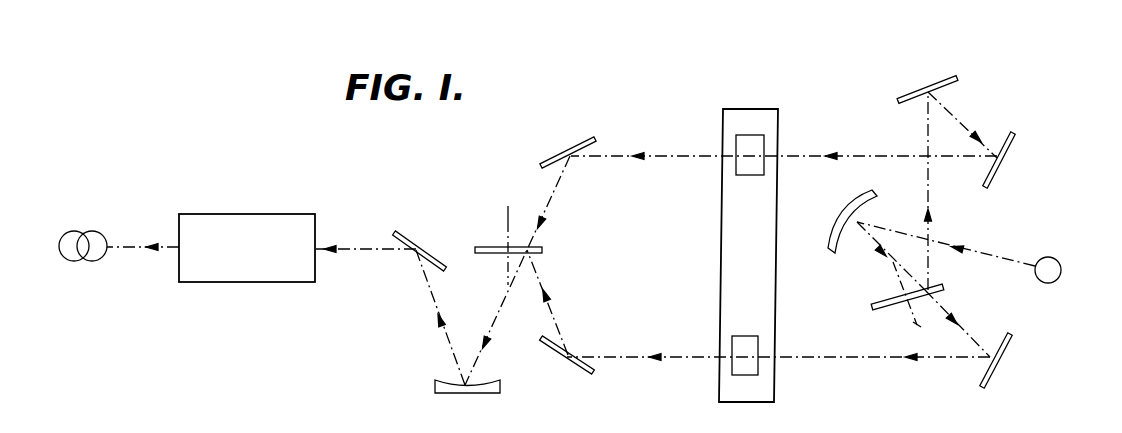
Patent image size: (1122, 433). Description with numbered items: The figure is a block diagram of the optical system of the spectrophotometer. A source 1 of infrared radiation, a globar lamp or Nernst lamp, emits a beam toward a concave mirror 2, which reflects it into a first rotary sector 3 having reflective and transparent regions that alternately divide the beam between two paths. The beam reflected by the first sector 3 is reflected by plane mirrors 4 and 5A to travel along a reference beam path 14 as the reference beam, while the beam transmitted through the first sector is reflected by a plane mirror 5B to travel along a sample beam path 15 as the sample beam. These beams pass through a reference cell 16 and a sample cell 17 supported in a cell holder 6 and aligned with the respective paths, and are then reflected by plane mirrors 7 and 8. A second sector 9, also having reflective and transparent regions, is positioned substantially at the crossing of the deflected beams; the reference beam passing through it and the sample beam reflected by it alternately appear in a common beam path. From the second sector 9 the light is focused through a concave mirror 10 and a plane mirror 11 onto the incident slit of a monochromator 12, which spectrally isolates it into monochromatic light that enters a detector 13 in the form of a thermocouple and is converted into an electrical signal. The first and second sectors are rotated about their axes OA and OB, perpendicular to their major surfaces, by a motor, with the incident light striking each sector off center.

The source of infrared radiation 1 is at (1060, 261).
The concave mirror 2 is at (830, 250).
The first rotary sector 3 is at (945, 293).
The plane mirror 4 is at (905, 96).
The plane mirror 5A is at (1013, 138).
The plane mirror 5B is at (995, 375).
The cell holder 6 is at (723, 118).
The plane mirror 7 is at (560, 152).
The plane mirror 8 is at (566, 360).
The second sector 9 is at (548, 250).
The concave mirror 10 is at (437, 381).
The plane mirror 11 is at (422, 248).
The monochromator 12 is at (245, 214).
The detector 13 is at (92, 231).
The reference beam path 14 is at (815, 154).
The sample beam path 15 is at (842, 359).
The reference cell 16 is at (736, 160).
The sample cell 17 is at (736, 366).
The axis of the first sector OA is at (912, 333).
The axis of the second sector OB is at (506, 222).